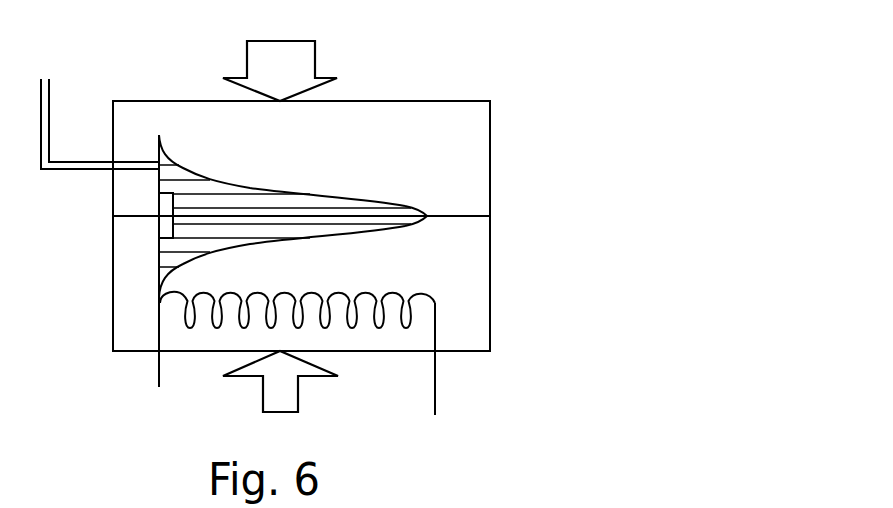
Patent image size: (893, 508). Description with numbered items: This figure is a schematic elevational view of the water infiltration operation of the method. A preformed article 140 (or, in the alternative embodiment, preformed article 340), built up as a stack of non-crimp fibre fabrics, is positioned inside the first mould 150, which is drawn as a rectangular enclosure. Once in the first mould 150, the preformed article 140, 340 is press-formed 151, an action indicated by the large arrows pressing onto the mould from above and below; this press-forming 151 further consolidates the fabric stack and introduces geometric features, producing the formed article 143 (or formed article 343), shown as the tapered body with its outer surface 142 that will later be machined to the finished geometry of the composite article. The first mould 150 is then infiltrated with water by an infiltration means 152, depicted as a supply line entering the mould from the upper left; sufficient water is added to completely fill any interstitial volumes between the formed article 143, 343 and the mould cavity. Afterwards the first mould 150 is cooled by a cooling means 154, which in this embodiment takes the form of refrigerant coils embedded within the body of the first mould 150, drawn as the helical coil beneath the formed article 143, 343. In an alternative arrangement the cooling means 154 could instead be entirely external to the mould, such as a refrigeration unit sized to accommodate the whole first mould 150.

The preformed article 140 is at (368, 215).
The preformed article 340 is at (368, 215).
The outer surface 142 is at (413, 200).
The formed article 143 is at (457, 134).
The formed article 343 is at (378, 202).
The first mould 150 is at (490, 127).
The press-forming 151 is at (315, 60).
The infiltration means 152 is at (44, 71).
The cooling means 154 is at (435, 315).